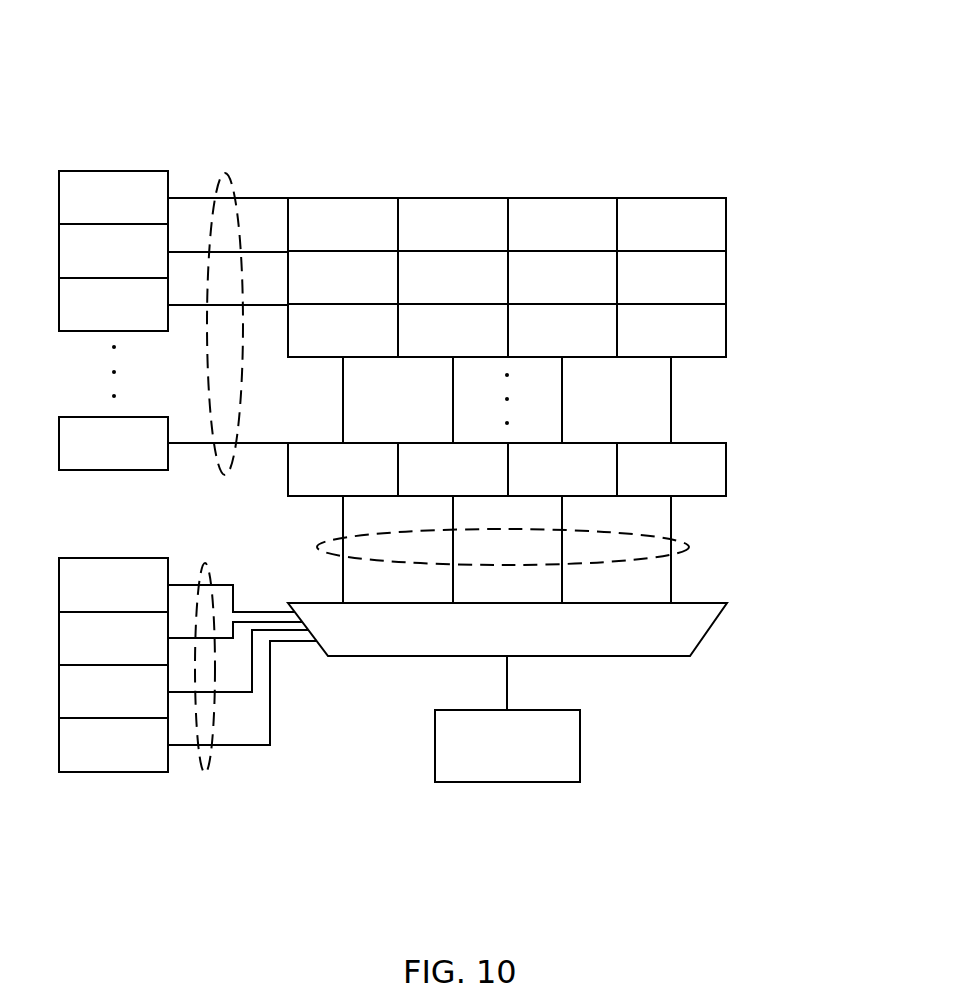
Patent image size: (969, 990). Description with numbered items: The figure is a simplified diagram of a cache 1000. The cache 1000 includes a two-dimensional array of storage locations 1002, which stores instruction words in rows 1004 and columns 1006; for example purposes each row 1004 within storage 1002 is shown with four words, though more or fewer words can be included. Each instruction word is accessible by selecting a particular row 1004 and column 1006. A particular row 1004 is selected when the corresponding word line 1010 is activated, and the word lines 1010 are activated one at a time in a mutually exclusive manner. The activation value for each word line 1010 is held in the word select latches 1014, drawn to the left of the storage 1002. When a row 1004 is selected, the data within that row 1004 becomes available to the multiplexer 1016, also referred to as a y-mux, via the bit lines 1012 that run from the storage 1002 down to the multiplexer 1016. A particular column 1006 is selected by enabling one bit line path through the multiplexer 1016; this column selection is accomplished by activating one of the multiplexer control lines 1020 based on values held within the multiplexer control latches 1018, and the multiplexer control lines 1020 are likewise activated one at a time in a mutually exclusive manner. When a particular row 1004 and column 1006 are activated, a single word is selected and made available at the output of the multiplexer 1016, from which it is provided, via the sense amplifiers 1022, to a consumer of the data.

The cache 1000 is at (256, 72).
The two-dimensional array of storage locations 1002 is at (715, 197).
The rows 1004 is at (790, 473).
The columns 1006 is at (343, 117).
The word lines 1010 is at (222, 173).
The bit lines 1012 is at (688, 537).
The word select latches 1014 is at (112, 171).
The multiplexer 1016 is at (710, 630).
The multiplexer control latches 1018 is at (112, 773).
The multiplexer control lines 1020 is at (208, 773).
The sense amplifiers 1022 is at (580, 747).